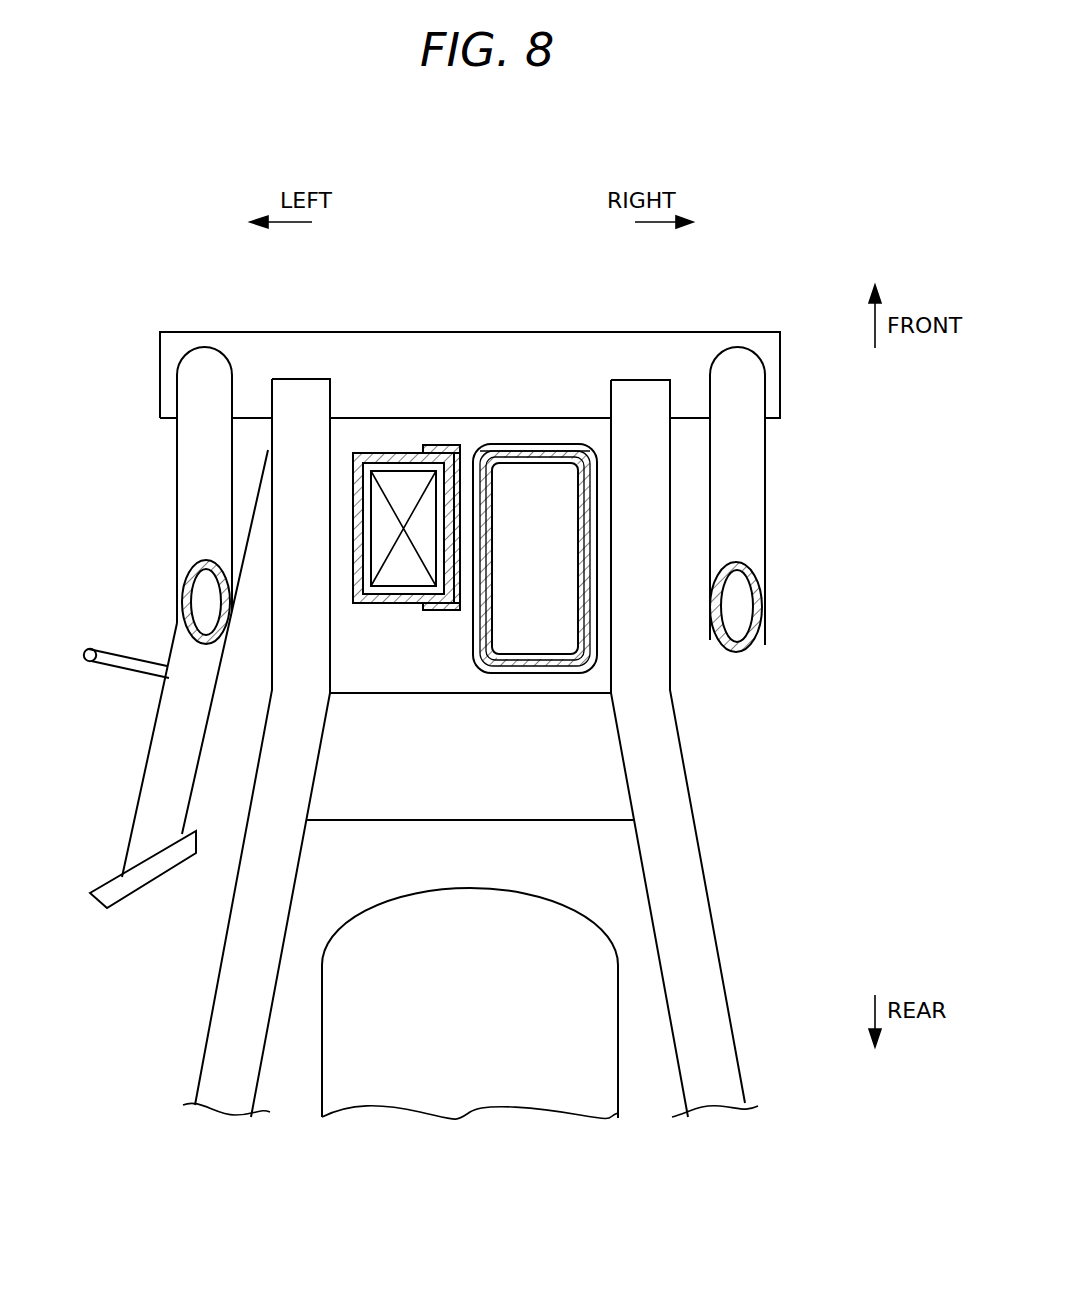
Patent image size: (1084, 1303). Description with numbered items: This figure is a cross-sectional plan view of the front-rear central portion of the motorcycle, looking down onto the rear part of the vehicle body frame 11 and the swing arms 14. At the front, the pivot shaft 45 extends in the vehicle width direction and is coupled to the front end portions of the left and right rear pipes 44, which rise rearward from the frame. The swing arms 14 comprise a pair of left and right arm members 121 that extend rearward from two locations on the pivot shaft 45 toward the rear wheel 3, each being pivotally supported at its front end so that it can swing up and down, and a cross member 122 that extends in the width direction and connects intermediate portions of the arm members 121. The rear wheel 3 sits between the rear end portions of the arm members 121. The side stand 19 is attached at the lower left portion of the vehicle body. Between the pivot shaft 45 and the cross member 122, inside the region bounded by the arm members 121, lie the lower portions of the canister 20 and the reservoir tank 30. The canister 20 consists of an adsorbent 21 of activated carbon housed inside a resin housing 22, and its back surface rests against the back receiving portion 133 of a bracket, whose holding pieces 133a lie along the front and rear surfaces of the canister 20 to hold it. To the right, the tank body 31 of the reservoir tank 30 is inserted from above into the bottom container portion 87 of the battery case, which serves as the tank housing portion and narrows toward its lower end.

The rear wheel 3 is at (470, 1098).
The vehicle body frame 11 is at (112, 338).
The swing arms 14 is at (702, 760).
The side stand 19 is at (160, 752).
The canister 20 is at (378, 442).
The adsorbent 21 is at (403, 570).
The housing 22 is at (354, 570).
The reservoir tank 30 is at (559, 436).
The tank body 31 is at (540, 660).
The rear pipe 44 is at (195, 486).
The pivot shaft 45 is at (771, 375).
The bottom container portion 87 is at (522, 444).
The arm members 121 is at (246, 936).
The cross member 122 is at (377, 797).
The back receiving portion 133 is at (465, 437).
The holding pieces 133a is at (433, 446).